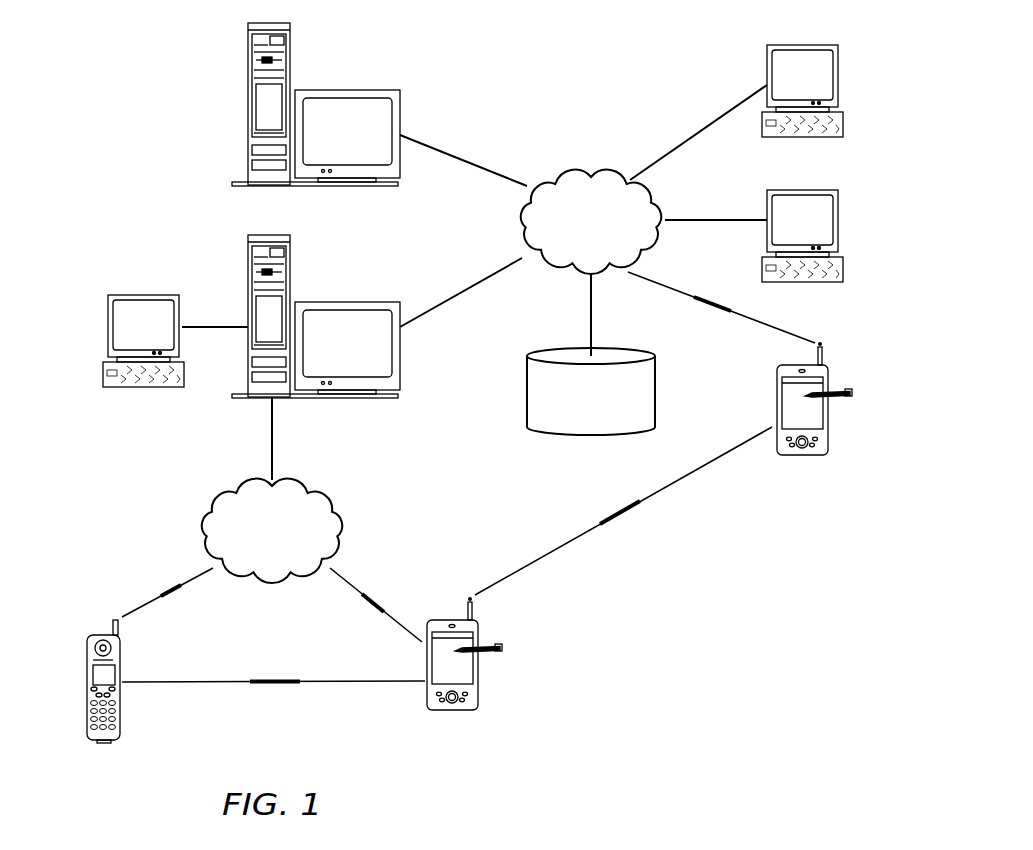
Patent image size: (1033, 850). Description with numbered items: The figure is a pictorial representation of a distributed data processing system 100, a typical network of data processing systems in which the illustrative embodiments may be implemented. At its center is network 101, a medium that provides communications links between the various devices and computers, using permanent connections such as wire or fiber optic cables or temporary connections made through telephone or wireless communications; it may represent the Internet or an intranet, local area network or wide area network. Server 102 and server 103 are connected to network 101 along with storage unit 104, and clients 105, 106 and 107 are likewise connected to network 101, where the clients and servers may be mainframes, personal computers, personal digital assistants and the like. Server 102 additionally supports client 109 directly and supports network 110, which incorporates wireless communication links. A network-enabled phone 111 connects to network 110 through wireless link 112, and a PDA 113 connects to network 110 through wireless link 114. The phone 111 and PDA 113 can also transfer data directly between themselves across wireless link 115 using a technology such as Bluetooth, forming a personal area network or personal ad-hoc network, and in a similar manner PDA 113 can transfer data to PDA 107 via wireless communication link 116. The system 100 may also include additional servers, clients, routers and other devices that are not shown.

The data processing system 100 is at (639, 80).
The network 101 is at (560, 172).
The server 102 is at (249, 270).
The server 103 is at (247, 108).
The storage unit 104 is at (527, 399).
The client 105 is at (840, 75).
The client 106 is at (840, 220).
The PDA 107 is at (830, 420).
The client 109 is at (108, 318).
The network 110 is at (238, 480).
The network-enabled phone 111 is at (86, 704).
The wireless link 112 is at (160, 603).
The PDA 113 is at (479, 668).
The wireless link 114 is at (380, 614).
The wireless link 115 is at (254, 685).
The wireless communication link 116 is at (615, 522).